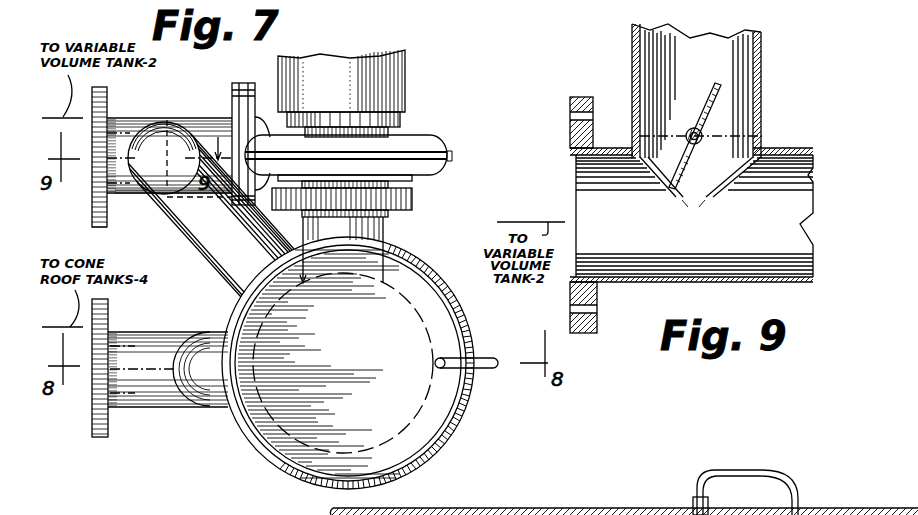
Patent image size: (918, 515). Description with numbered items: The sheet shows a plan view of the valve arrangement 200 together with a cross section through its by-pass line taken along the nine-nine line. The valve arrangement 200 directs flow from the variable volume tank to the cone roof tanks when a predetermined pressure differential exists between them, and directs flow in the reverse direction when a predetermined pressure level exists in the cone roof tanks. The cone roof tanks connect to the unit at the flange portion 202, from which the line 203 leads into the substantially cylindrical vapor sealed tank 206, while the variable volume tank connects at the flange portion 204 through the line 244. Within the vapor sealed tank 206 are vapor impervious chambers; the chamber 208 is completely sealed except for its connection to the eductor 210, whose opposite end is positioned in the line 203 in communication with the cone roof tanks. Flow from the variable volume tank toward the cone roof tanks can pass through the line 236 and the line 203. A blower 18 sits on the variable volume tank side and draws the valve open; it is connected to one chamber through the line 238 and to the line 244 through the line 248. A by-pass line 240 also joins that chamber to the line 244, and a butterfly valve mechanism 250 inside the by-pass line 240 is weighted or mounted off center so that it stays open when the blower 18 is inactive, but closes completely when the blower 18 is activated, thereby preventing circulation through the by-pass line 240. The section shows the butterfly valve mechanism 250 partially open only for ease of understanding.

In FIG. 7, the blower 18 is at (416, 146).
In FIG. 7, the valve arrangement 200 is at (446, 243).
In FIG. 7, the flange portion 202 is at (108, 428).
In FIG. 7, the line 203 is at (150, 318).
In FIG. 7, the flange portion 204 is at (106, 116).
In FIG. 9, the flange portion 204 is at (599, 97).
In FIG. 7, the vapor sealed tank 206 is at (264, 468).
In FIG. 7, the chamber 208 is at (565, 508).
In FIG. 7, the eductor 210 is at (478, 368).
In FIG. 7, the line 236 is at (203, 400).
In FIG. 7, the line 238 is at (385, 220).
In FIG. 7, the by-pass line 240 is at (226, 276).
In FIG. 9, the by-pass line 240 is at (762, 50).
In FIG. 7, the line 244 is at (125, 185).
In FIG. 9, the line 244 is at (794, 158).
In FIG. 7, the line 248 is at (276, 112).
In FIG. 7, the butterfly valve mechanism 250 is at (164, 123).
In FIG. 9, the butterfly valve mechanism 250 is at (705, 108).